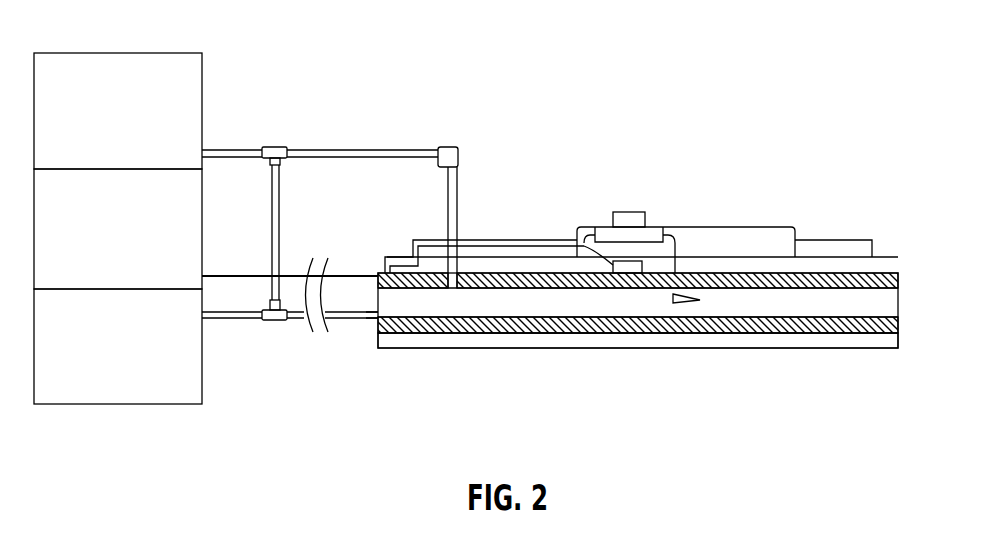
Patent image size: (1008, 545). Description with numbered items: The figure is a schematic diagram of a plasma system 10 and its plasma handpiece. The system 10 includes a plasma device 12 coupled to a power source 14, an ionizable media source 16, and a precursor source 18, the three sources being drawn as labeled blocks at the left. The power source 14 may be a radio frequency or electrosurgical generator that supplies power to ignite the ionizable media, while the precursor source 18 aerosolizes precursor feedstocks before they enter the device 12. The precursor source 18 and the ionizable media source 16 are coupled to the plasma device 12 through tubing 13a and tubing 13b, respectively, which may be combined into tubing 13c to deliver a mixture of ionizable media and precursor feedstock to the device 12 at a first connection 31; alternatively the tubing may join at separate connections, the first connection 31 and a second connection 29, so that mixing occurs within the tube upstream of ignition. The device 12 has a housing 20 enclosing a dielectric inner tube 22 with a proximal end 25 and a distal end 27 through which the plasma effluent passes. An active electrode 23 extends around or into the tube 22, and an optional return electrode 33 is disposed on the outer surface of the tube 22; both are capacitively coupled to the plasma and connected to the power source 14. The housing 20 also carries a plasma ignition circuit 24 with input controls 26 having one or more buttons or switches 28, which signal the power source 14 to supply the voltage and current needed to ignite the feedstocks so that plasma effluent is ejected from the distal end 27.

The plasma system 10 is at (564, 121).
The plasma device 12 is at (737, 153).
The tubing 13a is at (280, 201).
The tubing 13b is at (232, 319).
The tubing 13c is at (348, 321).
The power source 14 is at (202, 229).
The ionizable media source 16 is at (88, 404).
The precursor source 18 is at (202, 111).
The housing 20 is at (533, 349).
The dielectric inner tube 22 is at (448, 334).
The active electrode 23 is at (681, 304).
The plasma ignition circuit 24 is at (731, 214).
The proximal end 25 is at (413, 300).
The input controls 26 is at (596, 203).
The distal end 27 is at (875, 313).
The buttons or switches 28 is at (627, 211).
The second connection 29 is at (460, 270).
The first connection 31 is at (373, 319).
The return electrode 33 is at (633, 274).